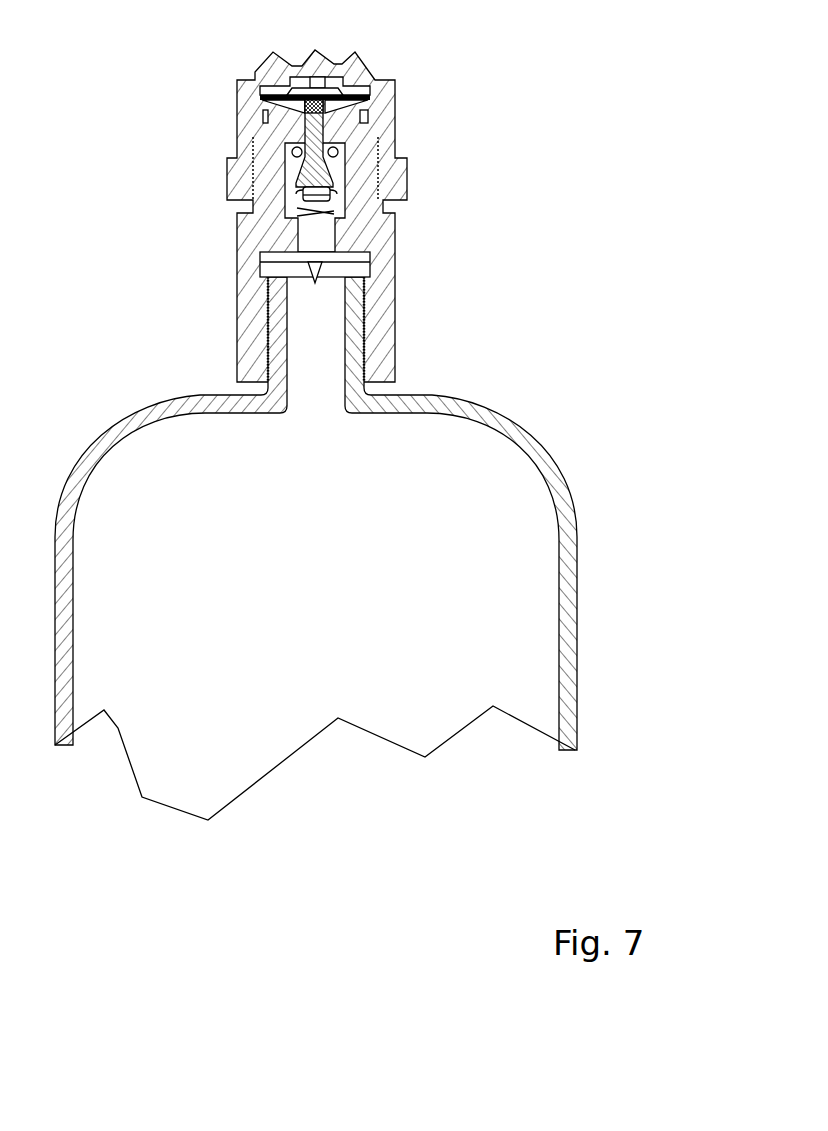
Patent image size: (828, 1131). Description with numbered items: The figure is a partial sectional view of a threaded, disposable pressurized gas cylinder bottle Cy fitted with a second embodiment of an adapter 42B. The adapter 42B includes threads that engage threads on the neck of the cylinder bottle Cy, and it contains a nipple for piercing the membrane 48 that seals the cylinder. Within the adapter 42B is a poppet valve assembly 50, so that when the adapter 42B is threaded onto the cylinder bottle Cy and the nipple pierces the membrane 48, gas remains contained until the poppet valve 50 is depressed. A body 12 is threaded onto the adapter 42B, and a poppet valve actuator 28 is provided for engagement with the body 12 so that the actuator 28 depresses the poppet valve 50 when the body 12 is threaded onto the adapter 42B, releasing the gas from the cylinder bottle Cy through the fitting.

The poppet valve actuator 28 is at (368, 93).
The body 12 is at (396, 113).
The poppet valve assembly 50 is at (320, 176).
The adapter 42B is at (400, 232).
The membrane 48 is at (348, 267).
The cylinder bottle Cy is at (597, 560).